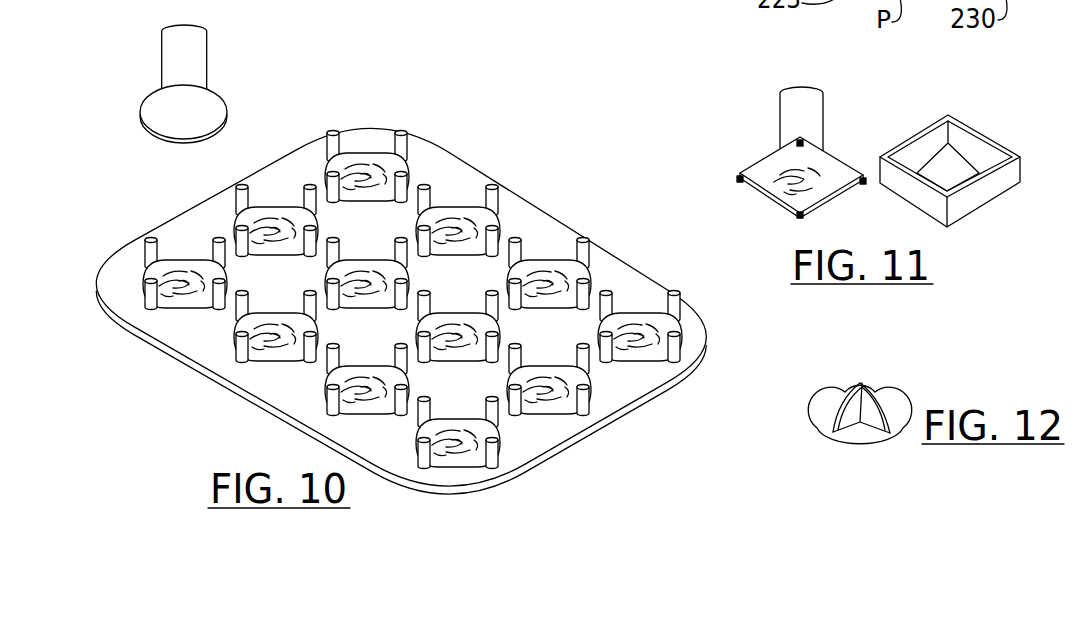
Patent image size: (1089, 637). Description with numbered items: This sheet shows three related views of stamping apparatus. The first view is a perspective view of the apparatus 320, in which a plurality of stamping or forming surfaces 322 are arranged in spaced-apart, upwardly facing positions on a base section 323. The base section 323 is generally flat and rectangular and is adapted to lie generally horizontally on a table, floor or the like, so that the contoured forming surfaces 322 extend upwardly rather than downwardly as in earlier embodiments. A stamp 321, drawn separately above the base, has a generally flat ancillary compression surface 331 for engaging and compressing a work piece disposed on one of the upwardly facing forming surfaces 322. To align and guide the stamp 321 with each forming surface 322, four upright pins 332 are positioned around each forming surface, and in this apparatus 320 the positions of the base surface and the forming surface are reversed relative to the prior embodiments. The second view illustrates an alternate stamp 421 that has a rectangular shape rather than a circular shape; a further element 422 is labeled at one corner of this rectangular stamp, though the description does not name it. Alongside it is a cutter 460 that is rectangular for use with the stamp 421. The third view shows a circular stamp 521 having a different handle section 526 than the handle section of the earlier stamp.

In FIG. 10, the apparatus 320 is at (471, 72).
In FIG. 10, the stamp 321 is at (214, 62).
In FIG. 10, the forming surfaces 322 is at (551, 278).
In FIG. 10, the base section 323 is at (302, 138).
In FIG. 10, the ancillary compression surface 331 is at (180, 81).
In FIG. 10, the upright pins 332 is at (148, 252).
In FIG. 11, the stamp 421 is at (781, 163).
In FIG. 11, the foot 422 is at (792, 200).
In FIG. 11, the cutter 460 is at (958, 144).
In FIG. 12, the circular stamp 521 is at (867, 449).
In FIG. 12, the handle section 526 is at (847, 442).